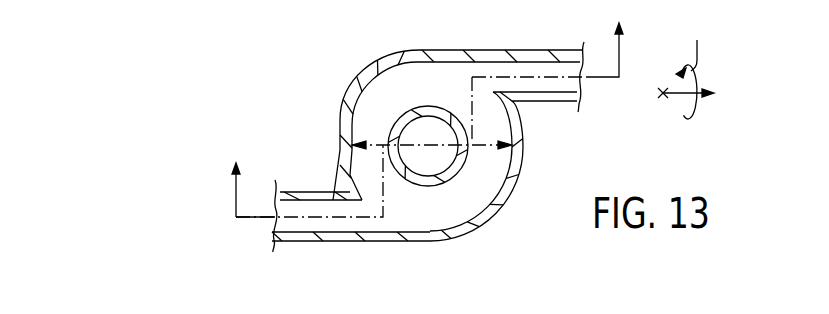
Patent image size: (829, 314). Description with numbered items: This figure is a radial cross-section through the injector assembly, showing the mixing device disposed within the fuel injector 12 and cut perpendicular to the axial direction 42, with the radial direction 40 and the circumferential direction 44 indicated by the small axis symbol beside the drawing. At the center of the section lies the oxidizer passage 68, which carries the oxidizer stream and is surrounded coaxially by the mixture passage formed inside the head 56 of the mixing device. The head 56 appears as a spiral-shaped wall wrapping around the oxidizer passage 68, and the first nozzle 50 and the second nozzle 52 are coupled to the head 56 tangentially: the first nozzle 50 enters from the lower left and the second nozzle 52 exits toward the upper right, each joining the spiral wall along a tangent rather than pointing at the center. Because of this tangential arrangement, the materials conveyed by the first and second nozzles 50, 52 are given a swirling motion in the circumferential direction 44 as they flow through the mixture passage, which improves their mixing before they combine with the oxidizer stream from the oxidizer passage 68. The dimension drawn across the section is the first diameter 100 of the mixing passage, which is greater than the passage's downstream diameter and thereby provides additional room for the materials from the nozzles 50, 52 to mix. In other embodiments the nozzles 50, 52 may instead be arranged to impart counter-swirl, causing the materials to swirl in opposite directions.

The fuel injector 12 is at (428, 114).
The radial direction 40 is at (700, 97).
The axial direction 42 is at (669, 99).
The circumferential direction 44 is at (699, 44).
The first nozzle 50 is at (313, 191).
The second nozzle 52 is at (550, 103).
The head 56 is at (377, 68).
The oxidizer passage 68 is at (463, 167).
The first diameter 100 is at (370, 143).